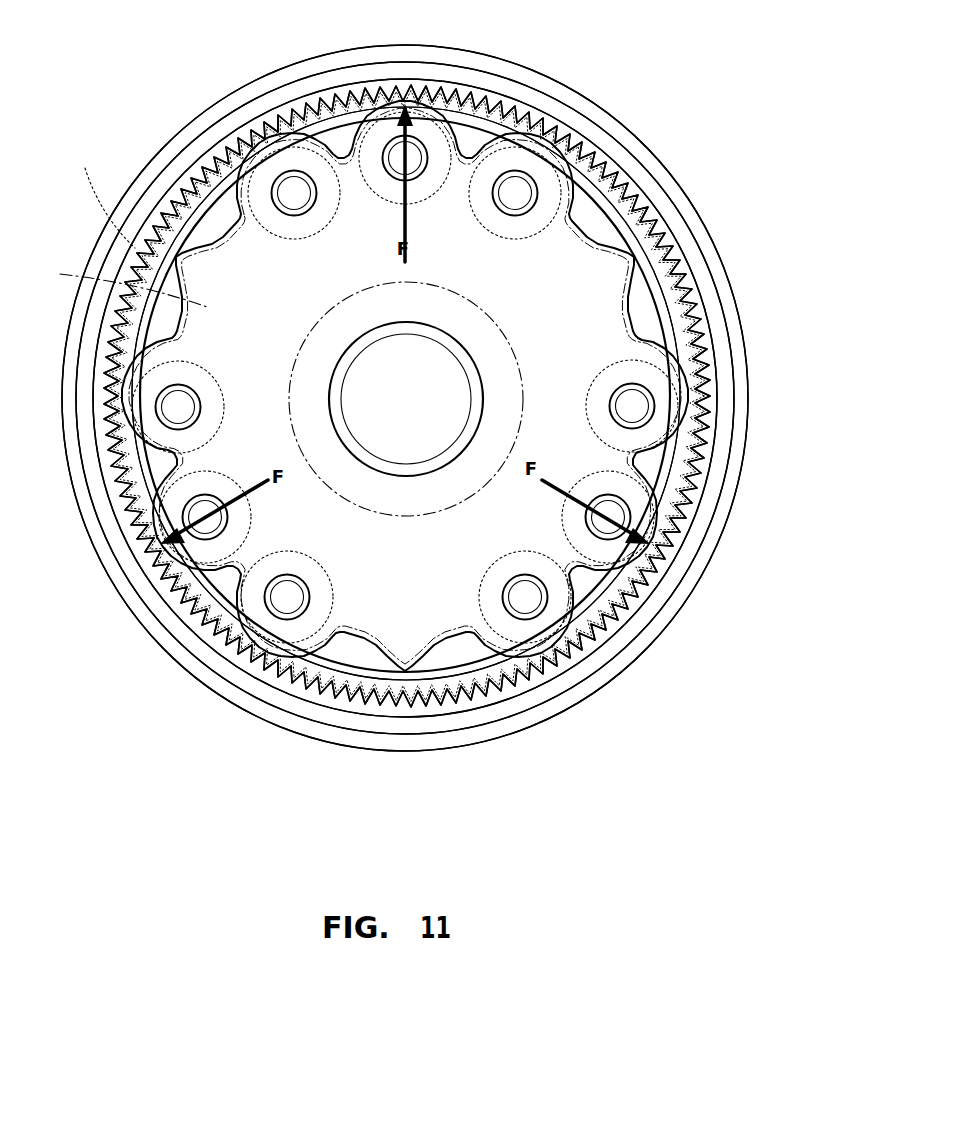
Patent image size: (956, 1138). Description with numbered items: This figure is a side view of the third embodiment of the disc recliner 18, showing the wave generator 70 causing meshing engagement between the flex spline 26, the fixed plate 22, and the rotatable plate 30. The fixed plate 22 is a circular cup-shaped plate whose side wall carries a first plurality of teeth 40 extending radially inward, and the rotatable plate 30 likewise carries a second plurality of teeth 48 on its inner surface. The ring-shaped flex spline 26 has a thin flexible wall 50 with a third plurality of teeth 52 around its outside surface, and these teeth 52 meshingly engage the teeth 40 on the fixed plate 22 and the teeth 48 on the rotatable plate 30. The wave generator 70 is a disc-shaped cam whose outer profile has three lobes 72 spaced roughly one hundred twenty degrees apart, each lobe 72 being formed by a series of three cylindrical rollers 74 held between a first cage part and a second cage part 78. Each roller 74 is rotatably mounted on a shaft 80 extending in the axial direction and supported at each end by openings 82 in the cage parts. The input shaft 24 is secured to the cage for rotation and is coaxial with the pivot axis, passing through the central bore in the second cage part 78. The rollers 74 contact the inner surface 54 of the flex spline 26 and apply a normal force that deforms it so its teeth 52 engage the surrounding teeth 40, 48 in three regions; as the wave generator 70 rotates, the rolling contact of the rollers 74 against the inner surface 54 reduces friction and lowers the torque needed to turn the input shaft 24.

The disc recliner 18 is at (675, 128).
The fixed plate 22 is at (737, 322).
The input shaft 24 is at (403, 340).
The flex spline 26 is at (640, 165).
The rotatable plate 30 is at (104, 270).
The first plurality of teeth 40 is at (183, 193).
The second plurality of teeth 48 is at (98, 195).
The flexible wall 50 is at (665, 196).
The third plurality of teeth 52 is at (597, 170).
The inner surface 54 is at (692, 218).
The wave generator 70 is at (316, 660).
The lobes 72 is at (500, 100).
The cylindrical rollers 74 is at (425, 115).
The second cage part 78 is at (383, 640).
The shaft 80 is at (297, 195).
The openings 82 is at (290, 217).